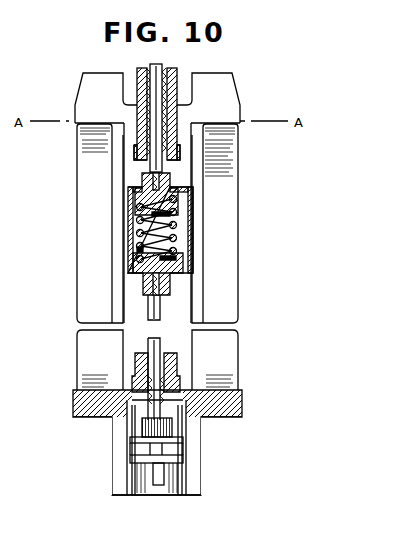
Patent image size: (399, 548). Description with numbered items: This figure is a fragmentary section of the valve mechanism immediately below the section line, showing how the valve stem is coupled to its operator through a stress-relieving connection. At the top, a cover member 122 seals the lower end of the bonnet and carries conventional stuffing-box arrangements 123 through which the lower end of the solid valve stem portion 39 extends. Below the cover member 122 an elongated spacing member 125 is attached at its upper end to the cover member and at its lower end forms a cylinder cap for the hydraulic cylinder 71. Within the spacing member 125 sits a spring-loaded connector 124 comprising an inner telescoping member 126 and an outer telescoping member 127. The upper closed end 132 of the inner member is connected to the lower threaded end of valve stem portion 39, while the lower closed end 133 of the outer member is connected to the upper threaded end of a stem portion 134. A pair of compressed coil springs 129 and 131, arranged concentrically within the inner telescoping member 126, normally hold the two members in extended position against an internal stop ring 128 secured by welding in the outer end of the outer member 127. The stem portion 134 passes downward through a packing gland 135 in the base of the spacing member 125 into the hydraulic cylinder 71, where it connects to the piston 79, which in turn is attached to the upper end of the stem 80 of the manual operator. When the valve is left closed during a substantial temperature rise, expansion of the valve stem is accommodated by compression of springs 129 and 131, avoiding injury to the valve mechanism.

The cover member 122 is at (98, 95).
The stuffing-box arrangements 123 is at (167, 129).
The solid valve stem portion 39 is at (152, 163).
The elongated spacing member 125 is at (86, 284).
The internal stop ring 128 is at (186, 183).
The upper closed end 132 is at (147, 199).
The inner telescoping member 126 is at (136, 222).
The coil spring 129 is at (178, 228).
The outer telescoping member 127 is at (135, 246).
The coil spring 131 is at (178, 254).
The lower closed end 133 is at (143, 277).
The spring-loaded connector 124 is at (175, 278).
The stem portion 134 is at (163, 310).
The packing gland 135 is at (142, 375).
The hydraulic cylinder 71 is at (201, 447).
The piston 79 is at (143, 453).
The stem 80 is at (155, 478).